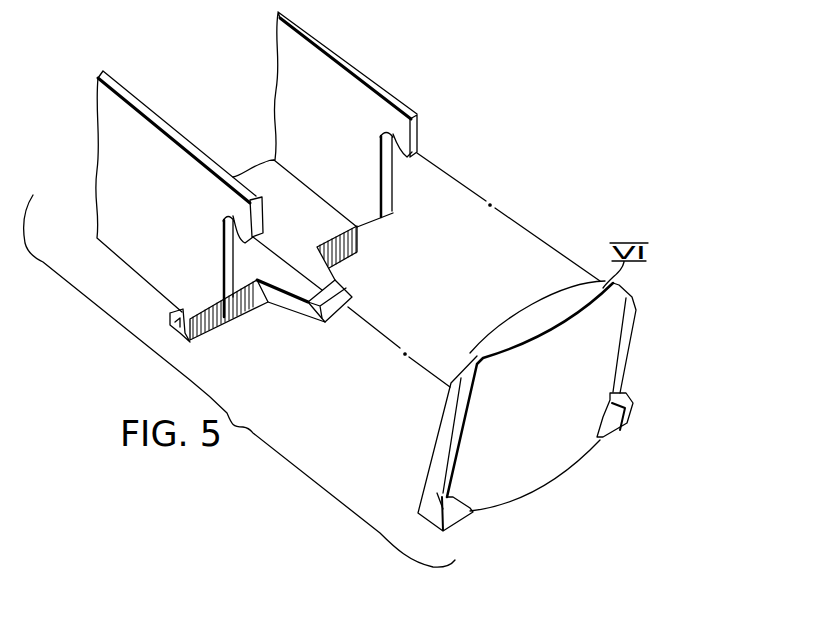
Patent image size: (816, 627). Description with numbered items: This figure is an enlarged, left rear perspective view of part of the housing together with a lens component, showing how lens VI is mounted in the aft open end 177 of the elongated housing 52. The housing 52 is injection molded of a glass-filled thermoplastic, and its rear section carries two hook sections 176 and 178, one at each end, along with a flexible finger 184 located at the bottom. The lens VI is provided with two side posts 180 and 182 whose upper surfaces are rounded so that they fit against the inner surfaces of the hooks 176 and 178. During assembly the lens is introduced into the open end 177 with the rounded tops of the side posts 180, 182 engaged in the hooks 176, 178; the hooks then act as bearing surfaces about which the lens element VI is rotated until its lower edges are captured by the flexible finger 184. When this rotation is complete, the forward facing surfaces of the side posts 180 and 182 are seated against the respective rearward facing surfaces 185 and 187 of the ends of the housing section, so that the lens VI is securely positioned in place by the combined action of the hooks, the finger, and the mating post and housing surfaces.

The elongated housing 52 is at (395, 58).
The hook section 176 is at (255, 215).
The open end 177 is at (330, 187).
The hook section 178 is at (417, 133).
The side post 180 is at (434, 450).
The side post 182 is at (625, 360).
The flexible finger 184 is at (293, 304).
The rearward facing surface 185 is at (227, 260).
The rearward facing surface 187 is at (386, 184).